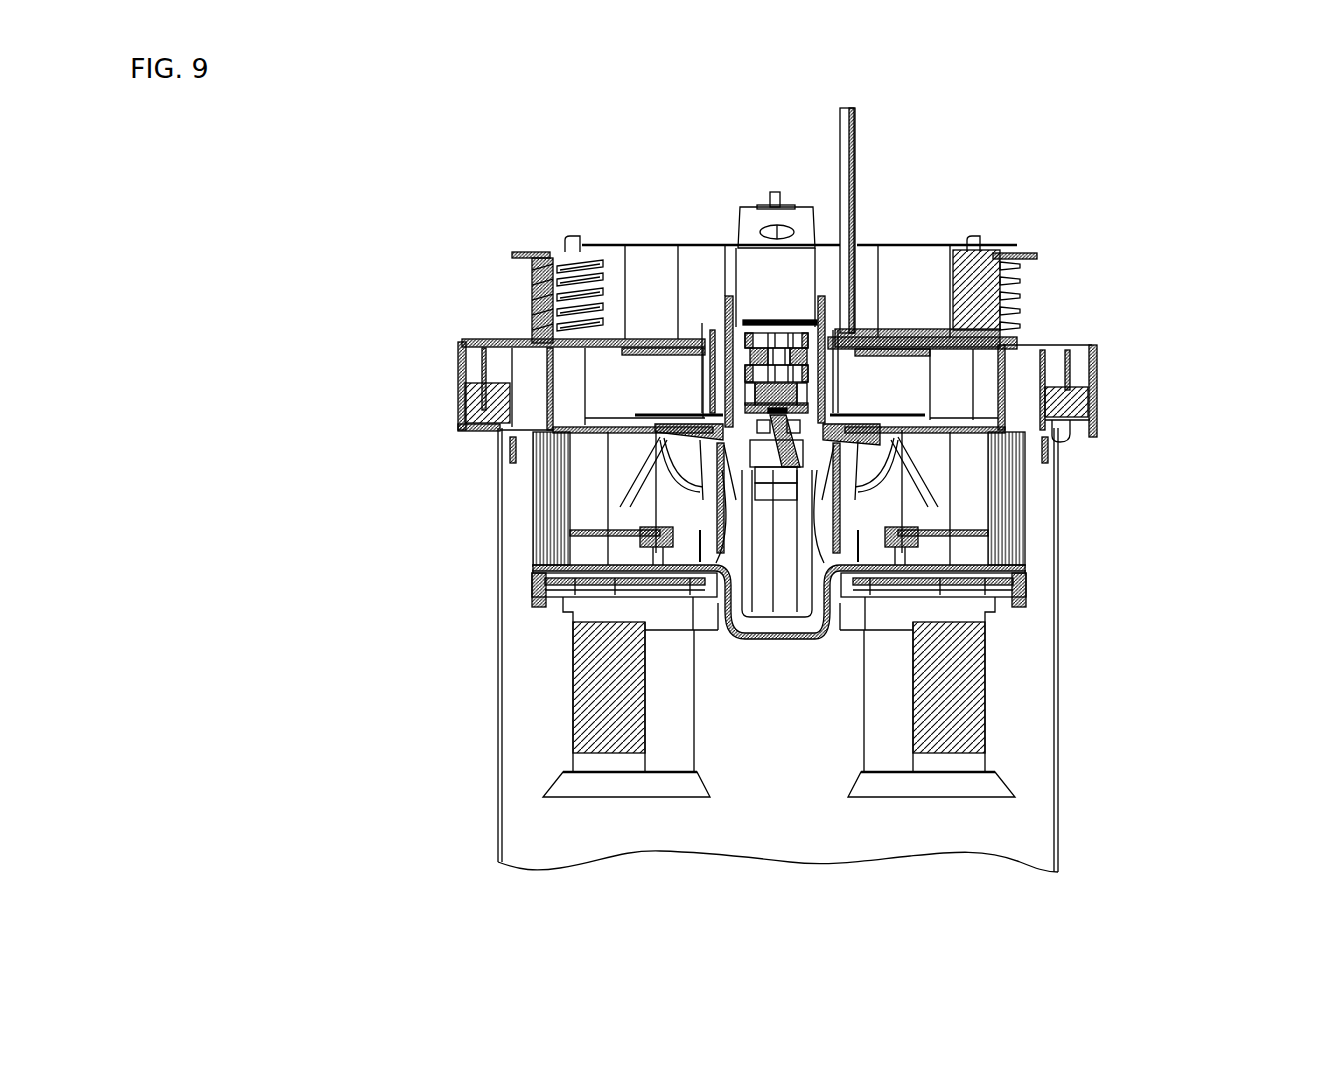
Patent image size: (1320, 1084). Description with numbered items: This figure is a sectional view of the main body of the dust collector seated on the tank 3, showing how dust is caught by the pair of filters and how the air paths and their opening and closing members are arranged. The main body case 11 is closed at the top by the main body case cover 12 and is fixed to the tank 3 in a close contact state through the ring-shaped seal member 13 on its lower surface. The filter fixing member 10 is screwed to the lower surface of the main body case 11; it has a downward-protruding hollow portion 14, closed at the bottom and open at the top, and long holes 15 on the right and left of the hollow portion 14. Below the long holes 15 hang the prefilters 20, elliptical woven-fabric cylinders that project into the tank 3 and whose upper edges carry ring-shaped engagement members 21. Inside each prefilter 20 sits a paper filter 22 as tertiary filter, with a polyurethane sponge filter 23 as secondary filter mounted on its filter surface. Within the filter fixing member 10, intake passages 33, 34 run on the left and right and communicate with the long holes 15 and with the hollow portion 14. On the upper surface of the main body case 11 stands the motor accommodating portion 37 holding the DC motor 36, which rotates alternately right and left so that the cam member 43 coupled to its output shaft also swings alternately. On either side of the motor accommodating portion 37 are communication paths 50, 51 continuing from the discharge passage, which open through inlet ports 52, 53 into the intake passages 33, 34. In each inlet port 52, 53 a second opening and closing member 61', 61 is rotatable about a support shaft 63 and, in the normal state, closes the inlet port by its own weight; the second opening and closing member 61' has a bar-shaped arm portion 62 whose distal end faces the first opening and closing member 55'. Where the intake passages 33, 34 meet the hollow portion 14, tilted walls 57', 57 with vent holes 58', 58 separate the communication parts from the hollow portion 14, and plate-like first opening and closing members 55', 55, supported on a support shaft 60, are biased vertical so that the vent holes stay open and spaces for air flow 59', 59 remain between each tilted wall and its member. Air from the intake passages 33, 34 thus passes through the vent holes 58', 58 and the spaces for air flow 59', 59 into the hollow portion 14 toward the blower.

The tank 3 is at (1068, 815).
The filter fixing member 10 is at (1024, 535).
The main body case 11 is at (1100, 388).
The main body case cover 12 is at (518, 250).
The ring-shaped seal member 13 is at (1060, 433).
The hollow portion 14 is at (790, 585).
The long holes 15 is at (587, 558).
The prefilter 20 is at (563, 737).
The ring-shaped engagement member 21 is at (532, 586).
The paper filter 22 is at (590, 607).
The polyurethane sponge filter 23 is at (590, 694).
The intake passage 33 is at (587, 503).
The intake passage 34 is at (963, 500).
The DC motor 36 is at (752, 207).
The motor accommodating portion 37 is at (830, 325).
The cam member 43 is at (773, 500).
The communication path 50 is at (570, 382).
The communication path 51 is at (930, 397).
The inlet port 52 is at (545, 259).
The inlet port 53 is at (1042, 234).
The first opening and closing member 55 is at (813, 689).
The first opening and closing member 55' is at (744, 689).
The tilted wall 57 is at (962, 283).
The tilted wall 57' is at (630, 291).
The vent hole 58 is at (907, 673).
The vent hole 58' is at (651, 673).
The space for air flow 59 is at (870, 738).
The space for air flow 59' is at (688, 737).
The support shaft 60 is at (725, 425).
The second opening and closing member 61 is at (995, 234).
The second opening and closing member 61' is at (560, 234).
The arm portion 62 is at (665, 462).
The support shaft 63 is at (690, 420).